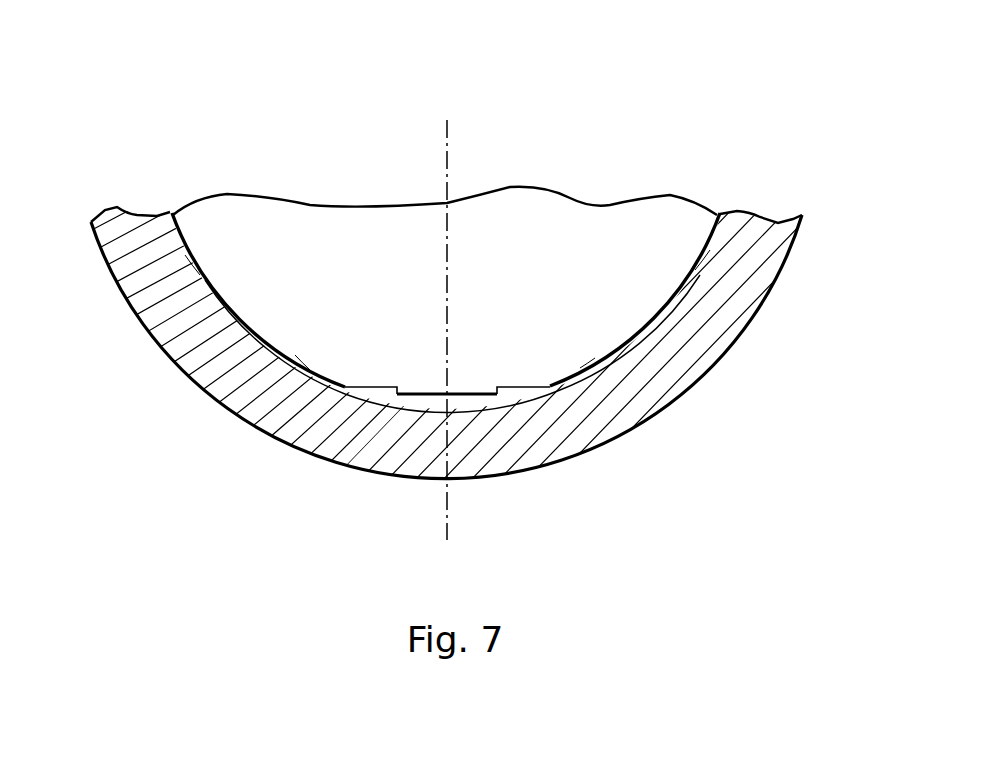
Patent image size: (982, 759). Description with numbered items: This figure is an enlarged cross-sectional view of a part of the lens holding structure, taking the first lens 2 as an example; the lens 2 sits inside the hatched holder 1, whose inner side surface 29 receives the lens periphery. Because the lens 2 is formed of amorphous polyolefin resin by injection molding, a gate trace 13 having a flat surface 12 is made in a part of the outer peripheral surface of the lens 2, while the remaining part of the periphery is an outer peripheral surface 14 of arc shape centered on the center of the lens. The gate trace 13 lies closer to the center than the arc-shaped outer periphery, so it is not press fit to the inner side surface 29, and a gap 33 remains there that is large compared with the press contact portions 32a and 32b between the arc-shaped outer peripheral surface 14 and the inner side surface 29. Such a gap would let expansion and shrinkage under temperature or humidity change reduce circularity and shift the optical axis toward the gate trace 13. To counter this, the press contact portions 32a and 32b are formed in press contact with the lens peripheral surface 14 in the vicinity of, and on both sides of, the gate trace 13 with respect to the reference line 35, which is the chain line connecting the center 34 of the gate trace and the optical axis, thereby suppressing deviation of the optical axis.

The frame body 1 is at (686, 378).
The lens 2 is at (540, 212).
The flat surface 12 is at (378, 388).
The gate trace 13 is at (463, 372).
The outer peripheral surface 14 is at (238, 319).
The inner side surface 29 is at (223, 303).
The press contact portion 32a is at (192, 262).
The press contact portion 32b is at (703, 263).
The gap 33 is at (513, 393).
The center of the gate trace 34 is at (445, 393).
The reference line 35 is at (447, 135).